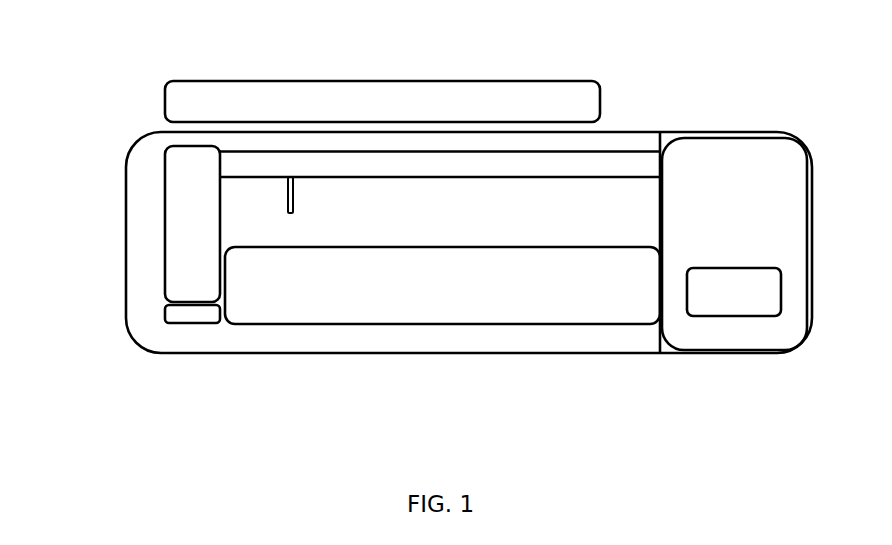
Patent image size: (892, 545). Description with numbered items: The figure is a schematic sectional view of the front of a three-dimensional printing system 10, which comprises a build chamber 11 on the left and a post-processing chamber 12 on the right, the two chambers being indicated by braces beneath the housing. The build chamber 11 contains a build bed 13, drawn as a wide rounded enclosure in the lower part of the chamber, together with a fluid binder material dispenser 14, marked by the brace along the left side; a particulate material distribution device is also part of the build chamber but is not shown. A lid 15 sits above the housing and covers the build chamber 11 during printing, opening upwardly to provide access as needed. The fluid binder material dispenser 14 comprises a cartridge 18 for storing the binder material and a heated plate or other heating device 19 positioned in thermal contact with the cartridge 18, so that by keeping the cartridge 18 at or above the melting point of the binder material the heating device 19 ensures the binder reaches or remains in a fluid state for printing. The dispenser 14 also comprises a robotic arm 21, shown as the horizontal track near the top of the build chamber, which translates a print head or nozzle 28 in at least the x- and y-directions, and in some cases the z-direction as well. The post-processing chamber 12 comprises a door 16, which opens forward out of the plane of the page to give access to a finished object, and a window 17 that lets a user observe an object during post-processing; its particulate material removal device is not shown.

The 3D printing system 10 is at (185, 55).
The build chamber 11 is at (660, 373).
The post-processing chamber 12 is at (812, 373).
The build bed 13 is at (456, 296).
The fluid binder material dispenser 14 is at (120, 153).
The lid 15 is at (380, 114).
The door 16 is at (746, 228).
The window 17 is at (744, 302).
The cartridge 18 is at (205, 232).
The heating device 19 is at (163, 312).
The robotic arm 21 is at (594, 163).
The print head or nozzle 28 is at (298, 193).